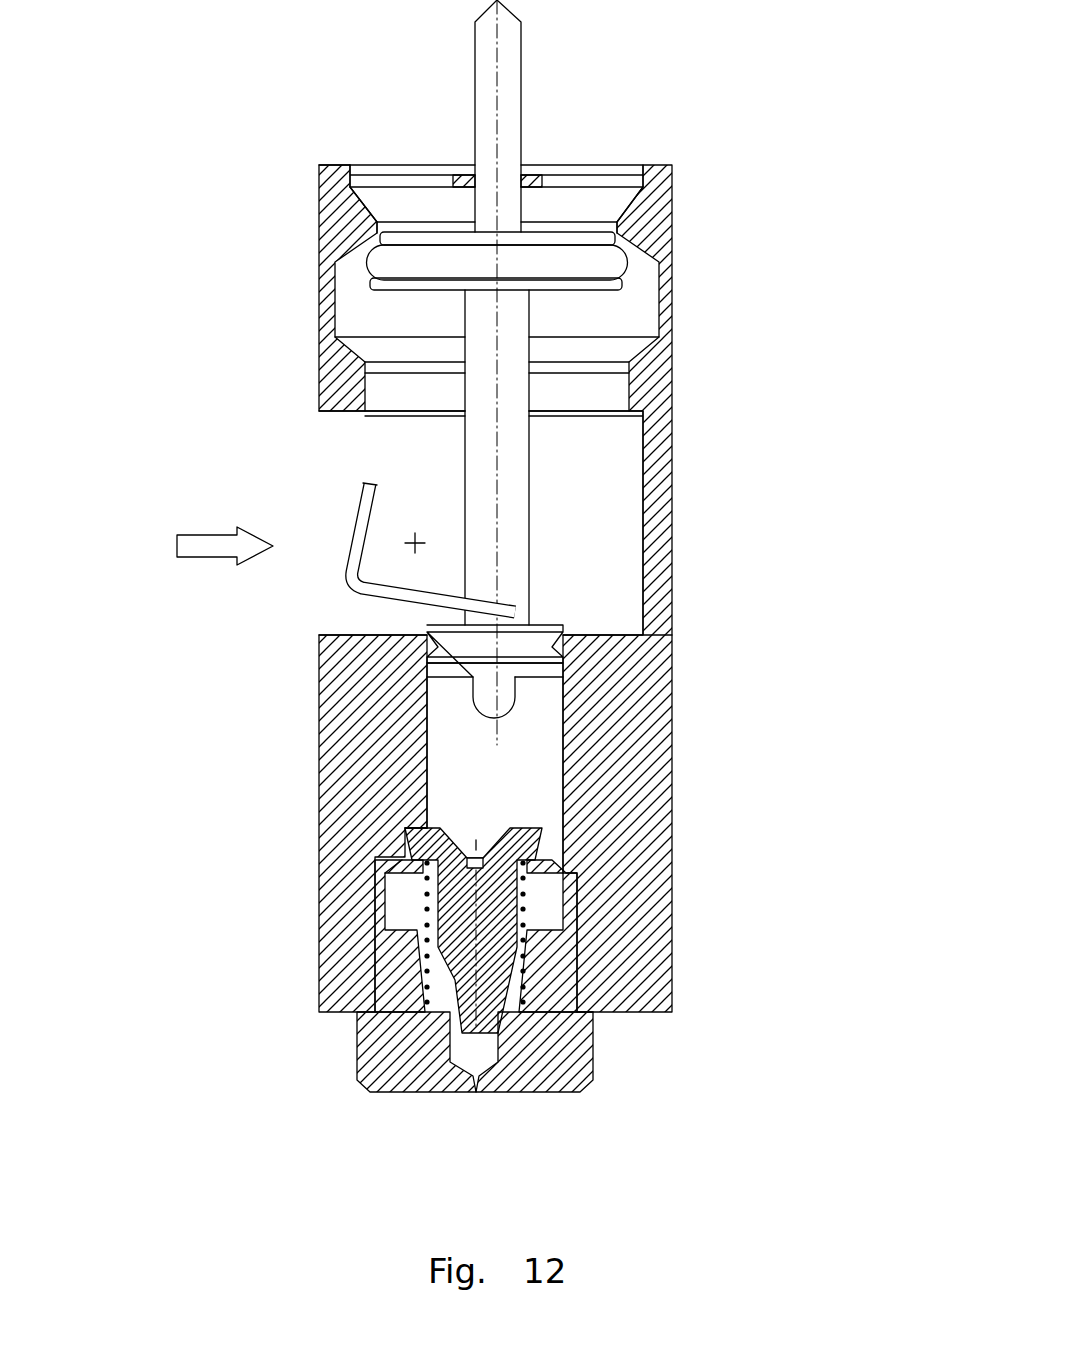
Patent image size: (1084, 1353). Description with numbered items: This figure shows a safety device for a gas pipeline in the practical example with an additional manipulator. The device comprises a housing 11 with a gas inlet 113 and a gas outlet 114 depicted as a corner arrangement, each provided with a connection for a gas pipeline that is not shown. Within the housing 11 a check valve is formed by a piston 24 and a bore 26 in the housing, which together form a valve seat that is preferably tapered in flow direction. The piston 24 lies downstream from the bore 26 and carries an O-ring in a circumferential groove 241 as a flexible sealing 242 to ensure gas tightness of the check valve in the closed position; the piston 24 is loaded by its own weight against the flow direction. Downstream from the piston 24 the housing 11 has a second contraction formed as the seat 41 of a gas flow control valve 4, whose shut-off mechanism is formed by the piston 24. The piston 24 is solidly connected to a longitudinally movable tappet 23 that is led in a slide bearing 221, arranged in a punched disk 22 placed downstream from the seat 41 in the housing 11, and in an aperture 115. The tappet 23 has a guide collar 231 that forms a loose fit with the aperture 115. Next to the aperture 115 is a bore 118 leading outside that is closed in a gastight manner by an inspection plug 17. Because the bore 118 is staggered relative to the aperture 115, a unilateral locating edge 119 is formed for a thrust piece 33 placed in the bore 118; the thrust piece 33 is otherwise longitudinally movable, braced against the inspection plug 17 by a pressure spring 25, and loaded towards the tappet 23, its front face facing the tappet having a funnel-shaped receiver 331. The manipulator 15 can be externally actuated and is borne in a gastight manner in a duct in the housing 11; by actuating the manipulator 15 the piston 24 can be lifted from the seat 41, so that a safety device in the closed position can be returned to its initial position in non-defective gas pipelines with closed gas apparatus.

The gas flow control valve 4 is at (646, 153).
The housing 11 is at (653, 718).
The manipulator 15 is at (363, 528).
The inspection plug 17 is at (557, 1042).
The punched disk 22 is at (527, 94).
The tappet 23 is at (512, 460).
The piston 24 is at (655, 314).
The pressure spring 25 is at (582, 1012).
The bore 26 is at (620, 400).
The thrust piece 33 is at (673, 948).
The seat 41 is at (593, 205).
The gas inlet 113 is at (352, 445).
The gas outlet 114 is at (388, 170).
The aperture 115 is at (555, 687).
The bore 118 is at (542, 883).
The locating edge 119 is at (420, 832).
The slide bearing 221 is at (455, 175).
The guide collar 231 is at (475, 662).
The circumferential groove 241 is at (395, 247).
The flexible sealing 242 is at (607, 256).
The funnel-shaped receiver 331 is at (483, 847).